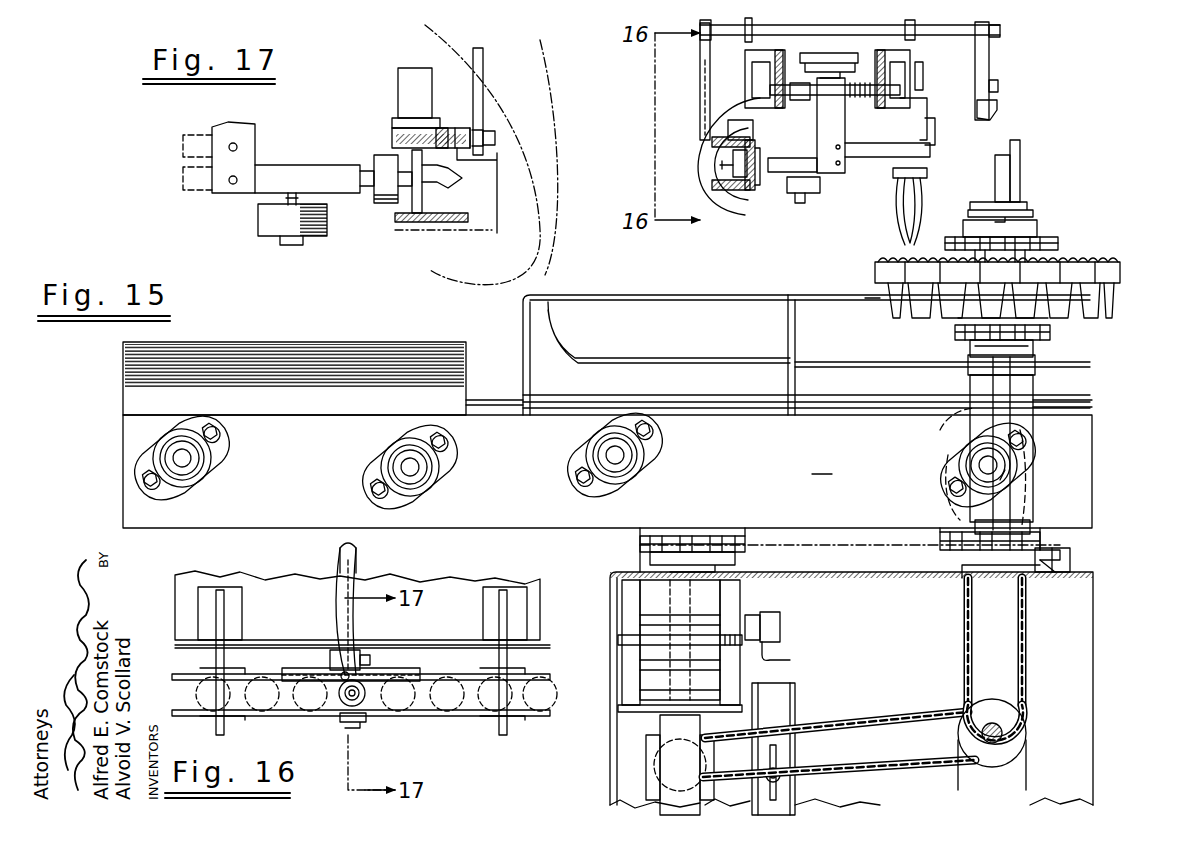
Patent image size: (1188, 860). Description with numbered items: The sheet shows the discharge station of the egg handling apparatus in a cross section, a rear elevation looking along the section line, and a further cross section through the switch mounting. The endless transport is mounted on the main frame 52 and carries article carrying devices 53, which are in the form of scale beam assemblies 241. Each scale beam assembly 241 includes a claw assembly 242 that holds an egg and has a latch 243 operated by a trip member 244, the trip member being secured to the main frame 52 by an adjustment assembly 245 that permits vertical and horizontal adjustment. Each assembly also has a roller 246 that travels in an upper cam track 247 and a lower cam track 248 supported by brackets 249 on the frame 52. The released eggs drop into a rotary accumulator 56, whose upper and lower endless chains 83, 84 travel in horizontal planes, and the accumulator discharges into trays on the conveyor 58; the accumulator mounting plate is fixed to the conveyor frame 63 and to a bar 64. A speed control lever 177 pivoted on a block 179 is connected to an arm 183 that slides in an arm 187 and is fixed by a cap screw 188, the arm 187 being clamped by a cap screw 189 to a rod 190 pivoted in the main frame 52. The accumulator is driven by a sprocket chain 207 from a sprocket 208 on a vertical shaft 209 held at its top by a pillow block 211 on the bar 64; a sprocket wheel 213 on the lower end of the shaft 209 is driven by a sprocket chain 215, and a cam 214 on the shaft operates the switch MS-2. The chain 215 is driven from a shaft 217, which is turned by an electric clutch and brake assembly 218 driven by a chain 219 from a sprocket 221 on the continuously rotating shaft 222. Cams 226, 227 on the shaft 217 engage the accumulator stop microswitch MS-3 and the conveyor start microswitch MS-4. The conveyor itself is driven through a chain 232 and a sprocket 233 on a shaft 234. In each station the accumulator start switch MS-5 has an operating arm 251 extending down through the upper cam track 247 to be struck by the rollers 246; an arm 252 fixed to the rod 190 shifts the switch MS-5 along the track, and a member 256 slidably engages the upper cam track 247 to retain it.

In FIG. 16, the main frame 52 is at (472, 625).
In FIG. 15, the article carrying devices 53 is at (818, 136).
In FIG. 15, the rotary accumulators 56 is at (1070, 225).
In FIG. 15, the conveyors 58 is at (1095, 375).
In FIG. 15, the conveyor frame 63 is at (823, 463).
In FIG. 15, the bar 64 is at (1028, 393).
In FIG. 15, the upper endless chain 83 is at (1062, 245).
In FIG. 15, the lower endless chain 84 is at (960, 320).
In FIG. 15, the speed control lever 177 is at (1022, 187).
In FIG. 15, the block 179 is at (1000, 172).
In FIG. 15, the arm 183 is at (997, 107).
In FIG. 15, the arm 187 is at (989, 60).
In FIG. 15, the cap screw 188 is at (998, 87).
In FIG. 15, the cap screw 189 is at (1000, 28).
In FIG. 15, the rod 190 is at (850, 30).
In FIG. 15, the sprocket chain 207 is at (1052, 330).
In FIG. 15, the sprocket 208 is at (1035, 345).
In FIG. 15, the vertical shaft 209 is at (995, 465).
In FIG. 15, the pillow block 211 is at (980, 368).
In FIG. 15, the sprocket wheel 213 is at (1020, 520).
In FIG. 15, the cam 214 is at (962, 572).
In FIG. 15, the sprocket chain 215 is at (732, 534).
In FIG. 15, the shaft 217 is at (700, 567).
In FIG. 15, the electric clutch and brake assembly 218 is at (640, 740).
In FIG. 15, the chain 219 is at (898, 735).
In FIG. 15, the sprocket 221 is at (960, 748).
In FIG. 15, the shaft 222 is at (1000, 730).
In FIG. 15, the cam 226 is at (706, 618).
In FIG. 15, the cam 227 is at (675, 636).
In FIG. 15, the chain 232 is at (1028, 668).
In FIG. 15, the sprocket 233 is at (945, 465).
In FIG. 15, the shaft 234 is at (1010, 478).
In FIG. 17, the scale beam assemblies 241 is at (340, 195).
In FIG. 15, the scale beam assemblies 241 is at (895, 175).
In FIG. 15, the claw assemblies 242 is at (930, 200).
In FIG. 15, the latch 243 is at (936, 130).
In FIG. 15, the trip member 244 is at (928, 100).
In FIG. 15, the adjustment assembly 245 is at (925, 70).
In FIG. 17, the roller 246 is at (428, 208).
In FIG. 15, the roller 246 is at (712, 185).
In FIG. 16, the roller 246 is at (282, 700).
In FIG. 17, the upper cam track 247 is at (497, 160).
In FIG. 15, the upper cam track 247 is at (715, 142).
In FIG. 16, the upper cam track 247 is at (548, 684).
In FIG. 17, the lower cam track 248 is at (465, 214).
In FIG. 15, the lower cam track 248 is at (755, 190).
In FIG. 16, the lower cam track 248 is at (548, 702).
In FIG. 15, the brackets 249 is at (735, 215).
In FIG. 17, the operating arm 251 is at (392, 131).
In FIG. 17, the arm 252 is at (483, 85).
In FIG. 15, the arm 252 is at (700, 80).
In FIG. 16, the arm 252 is at (340, 588).
In FIG. 17, the member 256 is at (436, 120).
In FIG. 15, the member 256 is at (745, 150).
In FIG. 16, the member 256 is at (420, 670).
In FIG. 15, the switch MS-2 is at (1070, 552).
In FIG. 15, the accumulator stop microswitch MS-3 is at (782, 618).
In FIG. 15, the conveyor start microswitch MS-4 is at (790, 657).
In FIG. 17, the accumulator start switch MS-5 is at (403, 87).
In FIG. 15, the accumulator start switch MS-5 is at (753, 128).
In FIG. 16, the accumulator start switch MS-5 is at (330, 658).